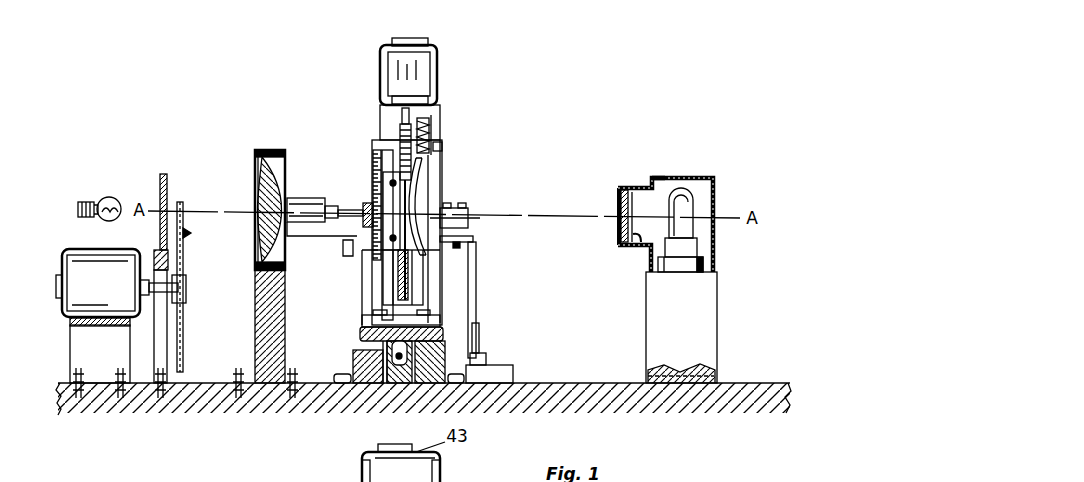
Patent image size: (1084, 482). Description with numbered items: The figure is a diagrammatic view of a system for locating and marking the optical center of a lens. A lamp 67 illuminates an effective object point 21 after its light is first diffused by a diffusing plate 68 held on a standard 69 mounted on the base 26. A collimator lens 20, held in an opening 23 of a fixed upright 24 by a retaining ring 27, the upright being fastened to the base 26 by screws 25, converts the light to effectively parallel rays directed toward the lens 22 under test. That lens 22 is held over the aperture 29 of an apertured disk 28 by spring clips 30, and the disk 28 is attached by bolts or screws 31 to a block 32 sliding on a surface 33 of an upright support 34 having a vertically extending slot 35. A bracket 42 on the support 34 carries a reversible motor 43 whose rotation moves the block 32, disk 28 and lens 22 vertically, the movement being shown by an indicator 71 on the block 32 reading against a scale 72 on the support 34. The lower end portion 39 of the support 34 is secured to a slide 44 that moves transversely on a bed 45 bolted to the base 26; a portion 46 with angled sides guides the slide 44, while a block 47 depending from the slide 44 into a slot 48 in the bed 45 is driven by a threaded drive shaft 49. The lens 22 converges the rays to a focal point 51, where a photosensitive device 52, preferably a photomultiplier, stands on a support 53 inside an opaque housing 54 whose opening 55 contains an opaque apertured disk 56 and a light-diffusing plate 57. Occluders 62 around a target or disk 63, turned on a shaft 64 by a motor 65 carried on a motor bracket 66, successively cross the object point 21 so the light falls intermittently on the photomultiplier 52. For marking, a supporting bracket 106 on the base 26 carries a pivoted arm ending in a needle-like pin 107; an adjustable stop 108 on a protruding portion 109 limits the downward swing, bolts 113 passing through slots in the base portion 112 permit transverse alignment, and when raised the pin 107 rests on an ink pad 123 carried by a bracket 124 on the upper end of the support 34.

The collimator lens 20 is at (253, 176).
The effective object point 21 is at (184, 206).
The lens under test 22 is at (423, 190).
The opening 23 is at (262, 162).
The upright 24 is at (241, 330).
The screws 25 is at (290, 408).
The base 26 is at (582, 388).
The retaining ring 27 is at (266, 150).
The apertured disk 28 is at (396, 283).
The aperture 29 is at (383, 263).
The spring clips 30 is at (427, 178).
The bolts or screws 31 is at (353, 253).
The block 32 is at (385, 185).
The surface 33 is at (385, 143).
The upright support 34 is at (366, 153).
The vertically extending slot 35 is at (385, 166).
The lower end portion 39 is at (442, 322).
The bracket 42 is at (430, 108).
The reversible motor 43 is at (432, 52).
The slide 44 is at (444, 334).
The bed 45 is at (346, 360).
The portion having angled sides 46 is at (446, 344).
The block 47 is at (413, 376).
The elongated opening or slot 48 is at (390, 383).
The threaded drive shaft 49 is at (399, 360).
The focal point 51 is at (622, 222).
The photosensitive device 52 is at (689, 208).
The support 53 is at (716, 300).
The opaque housing 54 is at (690, 177).
The opening 55 is at (626, 189).
The opaque apertured disk 56 is at (625, 204).
The light-diffusing plate 57 is at (640, 250).
The occluders 62 is at (191, 234).
The target or disk 63 is at (188, 263).
The shaft 64 is at (157, 268).
The motor 65 is at (92, 254).
The motor bracket 66 is at (80, 343).
The lamp 67 is at (117, 197).
The diffusing plate 68 is at (167, 179).
The standard 69 is at (158, 322).
The indicator 71 is at (345, 233).
The scale 72 is at (375, 190).
The supporting bracket 106 is at (470, 269).
The needle-like pin 107 is at (443, 206).
The adjustable stop 108 is at (461, 246).
The protruding portion 109 is at (463, 240).
The base portion 112 is at (513, 373).
The bolts 113 is at (490, 358).
The ink pad 123 is at (438, 135).
The bracket 124 is at (442, 147).